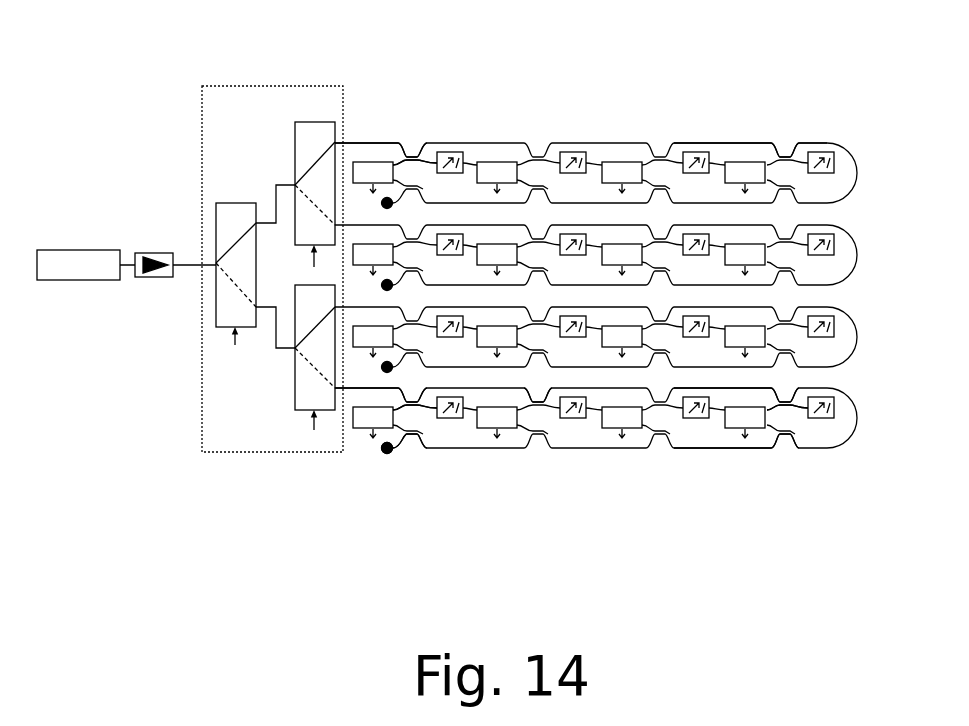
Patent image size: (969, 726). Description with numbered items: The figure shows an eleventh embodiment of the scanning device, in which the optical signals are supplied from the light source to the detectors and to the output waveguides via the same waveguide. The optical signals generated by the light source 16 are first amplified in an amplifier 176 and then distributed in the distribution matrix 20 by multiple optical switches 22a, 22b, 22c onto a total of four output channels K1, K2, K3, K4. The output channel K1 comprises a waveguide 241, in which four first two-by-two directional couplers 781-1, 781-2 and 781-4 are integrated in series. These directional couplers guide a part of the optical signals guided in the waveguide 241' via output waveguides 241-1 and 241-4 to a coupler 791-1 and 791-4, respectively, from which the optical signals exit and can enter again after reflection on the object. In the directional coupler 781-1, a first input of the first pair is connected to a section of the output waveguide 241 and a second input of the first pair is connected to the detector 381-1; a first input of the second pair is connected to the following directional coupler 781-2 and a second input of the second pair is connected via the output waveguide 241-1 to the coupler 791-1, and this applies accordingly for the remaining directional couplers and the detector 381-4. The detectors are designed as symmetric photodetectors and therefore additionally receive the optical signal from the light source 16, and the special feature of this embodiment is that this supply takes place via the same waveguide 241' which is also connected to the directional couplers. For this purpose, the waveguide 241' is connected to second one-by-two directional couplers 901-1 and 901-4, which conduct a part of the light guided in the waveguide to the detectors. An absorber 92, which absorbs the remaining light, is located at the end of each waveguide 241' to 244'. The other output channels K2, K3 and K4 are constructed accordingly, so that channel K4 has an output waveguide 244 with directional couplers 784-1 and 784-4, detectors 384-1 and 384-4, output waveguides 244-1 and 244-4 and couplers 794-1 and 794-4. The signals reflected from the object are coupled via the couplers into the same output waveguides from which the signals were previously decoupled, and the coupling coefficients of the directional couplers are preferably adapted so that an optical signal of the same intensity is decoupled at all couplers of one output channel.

The light source 16 is at (90, 280).
The amplifier 176 is at (157, 277).
The distribution matrix 20 is at (202, 420).
The optical switch 22a is at (232, 203).
The optical switch 22b is at (295, 135).
The optical switch 22c is at (295, 385).
The output channel K1 is at (870, 417).
The output channel K2 is at (870, 339).
The output channel K3 is at (870, 259).
The output channel K4 is at (870, 177).
The detector 384-1 is at (382, 162).
The detector 384-4 is at (753, 162).
The coupler 794-1 is at (457, 152).
The coupler 794-4 is at (829, 152).
The first directional coupler 784-1 is at (413, 135).
The first directional coupler 784-4 is at (787, 135).
The output waveguide 244-1 is at (430, 156).
The output waveguide 244-4 is at (806, 143).
The waveguide 244' is at (366, 105).
The output waveguide 244 is at (722, 105).
The detector 381-1 is at (360, 430).
The detector 381-4 is at (733, 431).
The coupler 791-1 is at (455, 419).
The coupler 791-4 is at (831, 419).
The first directional coupler 781-1 is at (421, 418).
The first directional coupler 781-2 is at (550, 422).
The first directional coupler 781-4 is at (795, 418).
The second directional coupler 901-1 is at (418, 456).
The second directional coupler 901-4 is at (788, 456).
The output waveguide 241-1 is at (425, 420).
The output waveguide 241-4 is at (798, 418).
The waveguide 241' is at (349, 441).
The waveguide 241 is at (722, 442).
The absorber 92 is at (387, 456).